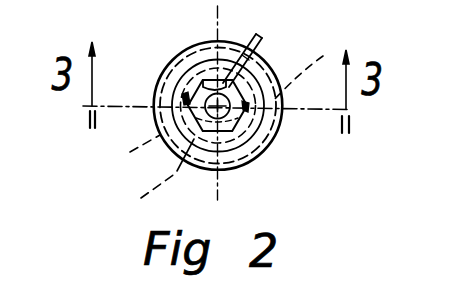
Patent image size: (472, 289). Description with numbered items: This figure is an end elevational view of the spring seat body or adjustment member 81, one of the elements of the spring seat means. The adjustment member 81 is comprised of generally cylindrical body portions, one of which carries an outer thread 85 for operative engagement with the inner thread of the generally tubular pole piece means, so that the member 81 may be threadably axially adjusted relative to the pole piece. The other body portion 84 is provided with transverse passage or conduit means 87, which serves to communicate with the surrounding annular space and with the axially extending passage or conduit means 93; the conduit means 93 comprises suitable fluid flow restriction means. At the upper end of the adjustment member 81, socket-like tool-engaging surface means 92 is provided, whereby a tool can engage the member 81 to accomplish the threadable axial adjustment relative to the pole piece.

The spring seat body member 81 is at (270, 158).
The body portion 84 is at (150, 178).
The outer thread 85 is at (305, 65).
The transverse passage or conduit means 87 is at (128, 154).
The socket-like tool-engaging surface means 92 is at (220, 131).
The axially extending passage or conduit means 93 is at (259, 36).